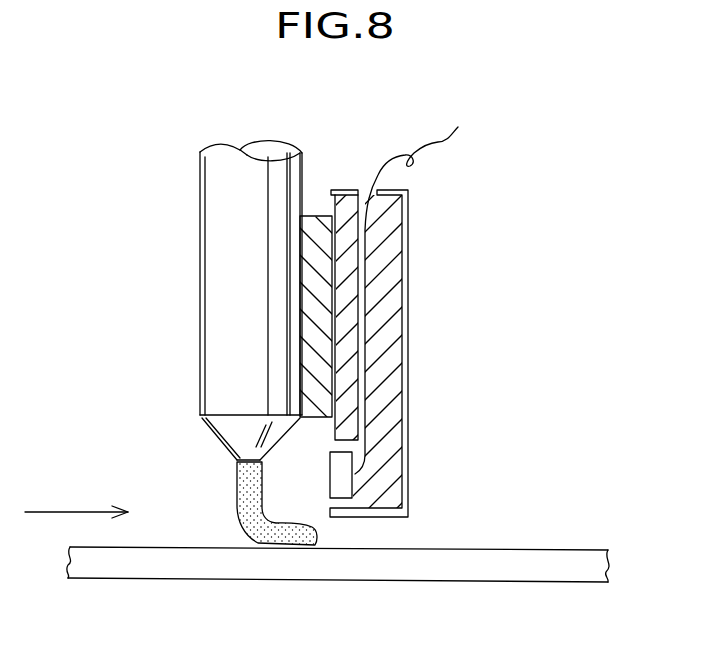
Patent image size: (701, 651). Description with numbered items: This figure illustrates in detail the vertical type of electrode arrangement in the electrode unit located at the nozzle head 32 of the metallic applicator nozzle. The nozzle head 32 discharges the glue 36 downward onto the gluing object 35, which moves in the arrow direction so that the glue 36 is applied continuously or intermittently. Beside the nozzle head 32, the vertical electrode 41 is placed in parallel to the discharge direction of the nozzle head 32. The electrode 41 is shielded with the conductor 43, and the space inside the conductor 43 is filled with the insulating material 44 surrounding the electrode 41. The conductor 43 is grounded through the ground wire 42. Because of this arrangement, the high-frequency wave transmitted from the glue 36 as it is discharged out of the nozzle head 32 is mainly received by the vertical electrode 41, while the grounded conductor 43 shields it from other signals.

The nozzle head 32 is at (237, 145).
The gluing object 35 is at (195, 578).
The glue 36 is at (234, 508).
The vertical electrode 41 is at (328, 480).
The ground wire 42 is at (416, 283).
The conductor 43 is at (408, 308).
The insulating material 44 is at (318, 215).